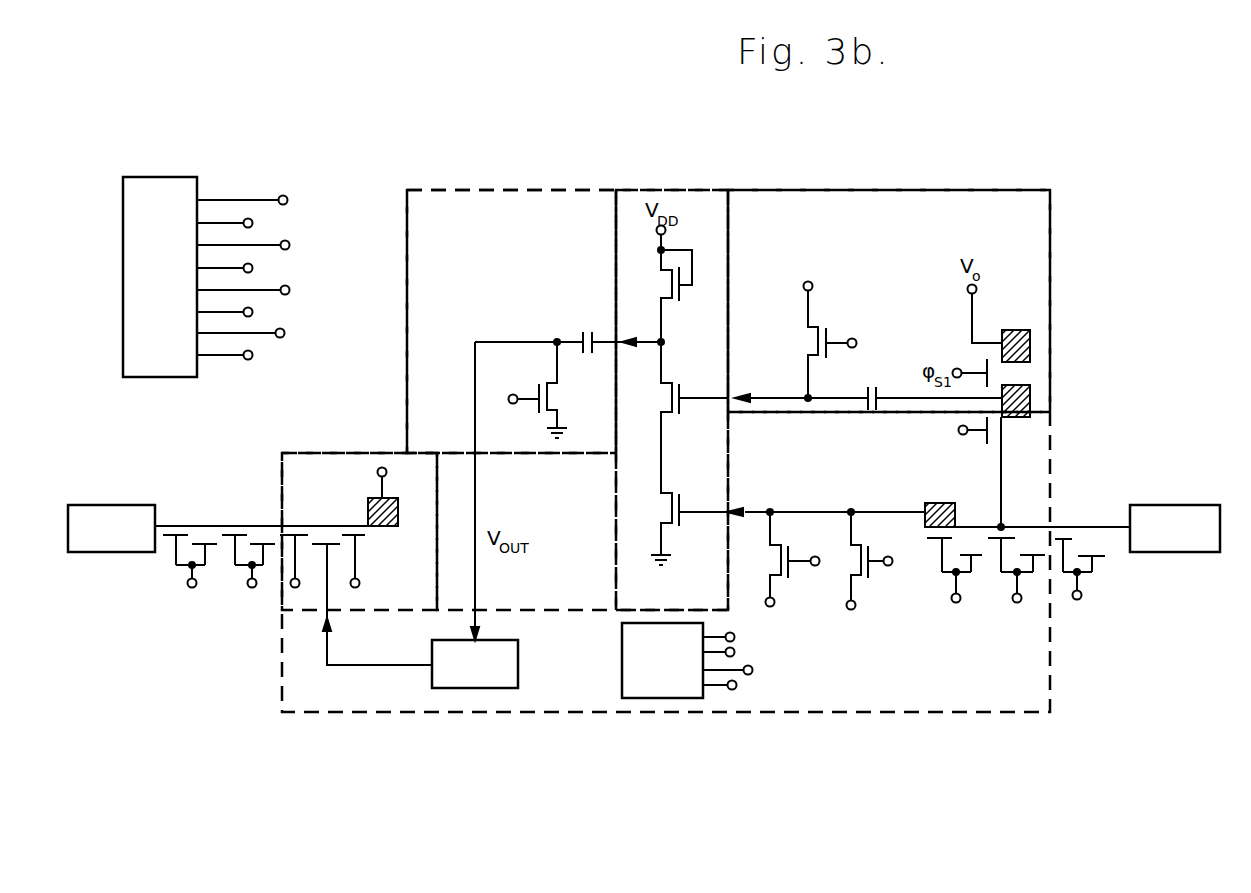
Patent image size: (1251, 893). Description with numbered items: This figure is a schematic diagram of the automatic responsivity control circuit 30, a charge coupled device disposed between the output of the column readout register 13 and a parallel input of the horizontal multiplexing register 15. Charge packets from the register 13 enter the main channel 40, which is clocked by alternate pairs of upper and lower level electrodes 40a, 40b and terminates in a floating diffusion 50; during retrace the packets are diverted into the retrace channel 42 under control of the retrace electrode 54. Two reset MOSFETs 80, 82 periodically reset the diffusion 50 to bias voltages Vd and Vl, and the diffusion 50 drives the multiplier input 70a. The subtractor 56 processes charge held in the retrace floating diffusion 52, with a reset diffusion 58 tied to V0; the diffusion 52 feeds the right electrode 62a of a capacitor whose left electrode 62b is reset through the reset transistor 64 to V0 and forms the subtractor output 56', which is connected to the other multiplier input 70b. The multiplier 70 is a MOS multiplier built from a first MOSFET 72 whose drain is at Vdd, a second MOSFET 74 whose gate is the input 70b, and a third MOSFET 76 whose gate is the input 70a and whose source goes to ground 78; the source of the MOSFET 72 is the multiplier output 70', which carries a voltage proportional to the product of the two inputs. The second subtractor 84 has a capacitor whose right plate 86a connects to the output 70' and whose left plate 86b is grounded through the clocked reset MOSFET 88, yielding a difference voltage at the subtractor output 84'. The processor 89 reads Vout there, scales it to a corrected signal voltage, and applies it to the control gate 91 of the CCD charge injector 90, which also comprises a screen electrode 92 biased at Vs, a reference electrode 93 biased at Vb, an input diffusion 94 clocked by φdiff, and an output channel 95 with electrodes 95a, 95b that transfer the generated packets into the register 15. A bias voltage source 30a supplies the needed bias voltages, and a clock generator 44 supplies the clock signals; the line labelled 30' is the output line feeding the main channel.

The clock generator 44 is at (168, 287).
The automatic responsivity control (ARC) circuit 30 is at (666, 436).
The second subtractor 84 is at (511, 321).
The multiplier 70 is at (672, 400).
The subtractor 56 is at (889, 301).
The CCD charge injector 90 is at (414, 584).
The first MOSFET 72 is at (671, 302).
The multiplier output 70' is at (569, 319).
The right plate of capacitor 86a is at (592, 353).
The left plate of capacitor 86b is at (583, 332).
The subtractor output 84' is at (495, 491).
The clocked reset MOSFET 88 is at (546, 383).
The ground 78 is at (569, 431).
The second MOSFET 74 is at (679, 384).
The multiplier input 70b is at (706, 414).
The third MOSFET 76 is at (679, 494).
The multiplier input 70a is at (728, 510).
The subtractor output 56' is at (868, 384).
The right electrode of capacitor 62a is at (868, 388).
The left capacitor electrode 62b is at (874, 411).
The reset transistor 64 is at (826, 329).
The reset diffusion 58 is at (1026, 330).
The retrace floating diffusion 52 is at (1030, 395).
The retrace electrode 54 is at (988, 445).
The retrace channel 42 is at (1002, 452).
The floating diffusion 50 is at (927, 503).
The output line 30' is at (1042, 511).
The column readout register 13 is at (1220, 505).
The main channel 40 is at (1016, 559).
The upper level electrode 40a is at (998, 541).
The lower level electrode 40b is at (1039, 550).
The reset MOSFET 80 is at (789, 577).
The reset MOSFET 82 is at (869, 579).
The horizontal multiplexing register 15 is at (156, 553).
The output channel 95 is at (261, 560).
The upper level electrode 95a is at (235, 540).
The lower level electrode 95b is at (262, 543).
The screen electrode 92 is at (284, 533).
The control gate 91 is at (323, 542).
The reference electrode 93 is at (352, 533).
The input diffusion 94 is at (398, 526).
The processor 89 is at (489, 676).
The bias voltage source 30a is at (699, 660).